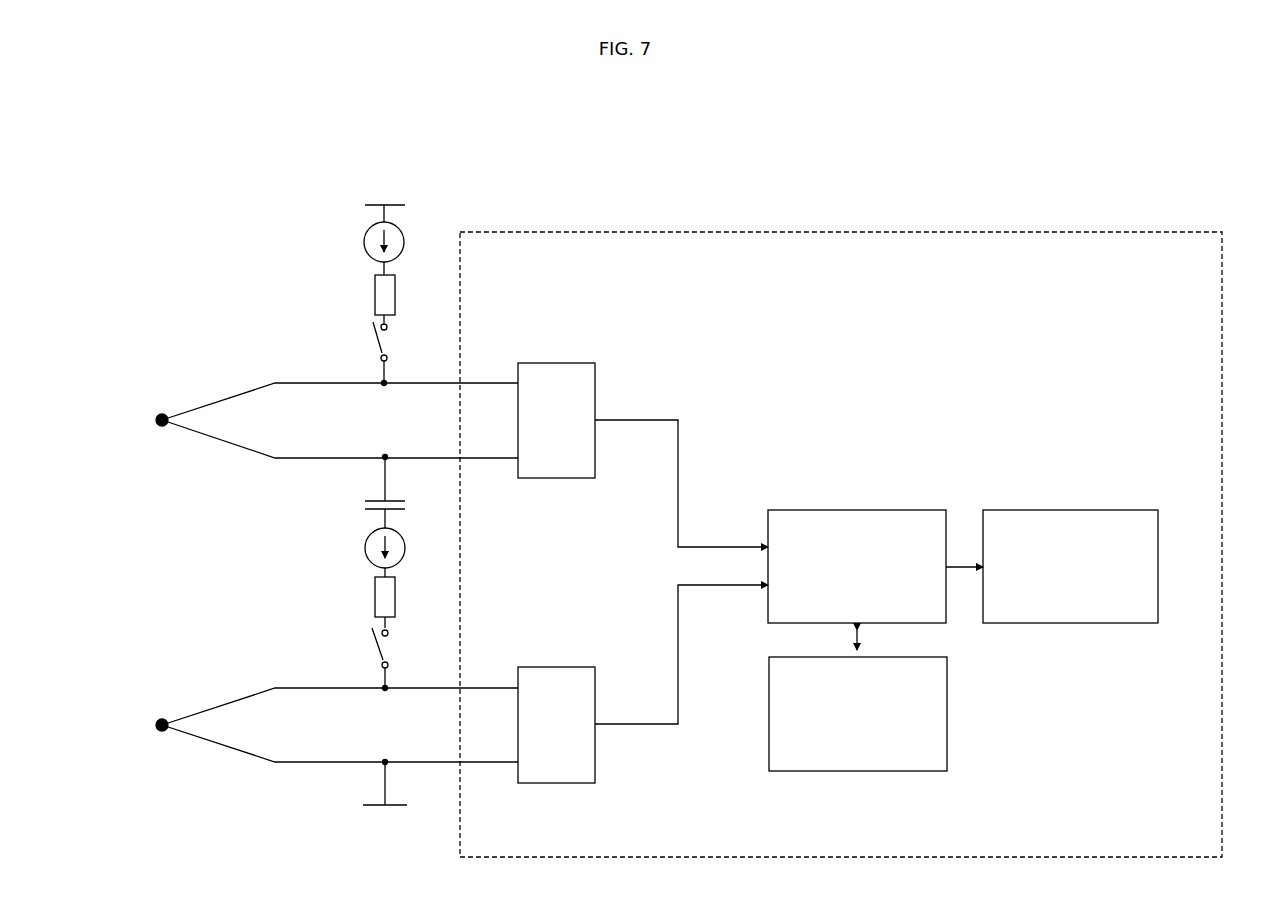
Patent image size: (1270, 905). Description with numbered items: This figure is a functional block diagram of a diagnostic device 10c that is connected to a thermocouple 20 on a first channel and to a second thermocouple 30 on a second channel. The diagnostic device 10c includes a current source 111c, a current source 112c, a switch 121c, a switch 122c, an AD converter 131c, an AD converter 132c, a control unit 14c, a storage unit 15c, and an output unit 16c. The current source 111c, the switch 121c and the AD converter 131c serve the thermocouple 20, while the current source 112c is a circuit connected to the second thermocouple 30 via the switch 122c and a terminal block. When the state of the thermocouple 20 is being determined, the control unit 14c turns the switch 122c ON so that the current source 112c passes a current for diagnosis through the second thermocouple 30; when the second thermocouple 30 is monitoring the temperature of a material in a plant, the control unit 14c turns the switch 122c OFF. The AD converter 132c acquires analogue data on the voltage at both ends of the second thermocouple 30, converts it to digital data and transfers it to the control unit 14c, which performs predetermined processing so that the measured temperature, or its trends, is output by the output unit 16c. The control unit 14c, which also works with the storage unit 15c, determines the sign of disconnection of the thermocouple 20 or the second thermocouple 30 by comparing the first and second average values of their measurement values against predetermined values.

The diagnostic device 10c is at (872, 232).
The thermocouple 20 is at (160, 414).
The second thermocouple 30 is at (160, 719).
The current source 111c is at (364, 240).
The current source 112c is at (365, 546).
The switch 121c is at (372, 340).
The switch 122c is at (372, 646).
The AD converter 131c is at (552, 363).
The AD converter 132c is at (552, 667).
The control unit 14c is at (900, 510).
The storage unit 15c is at (947, 710).
The output unit 16c is at (1103, 510).